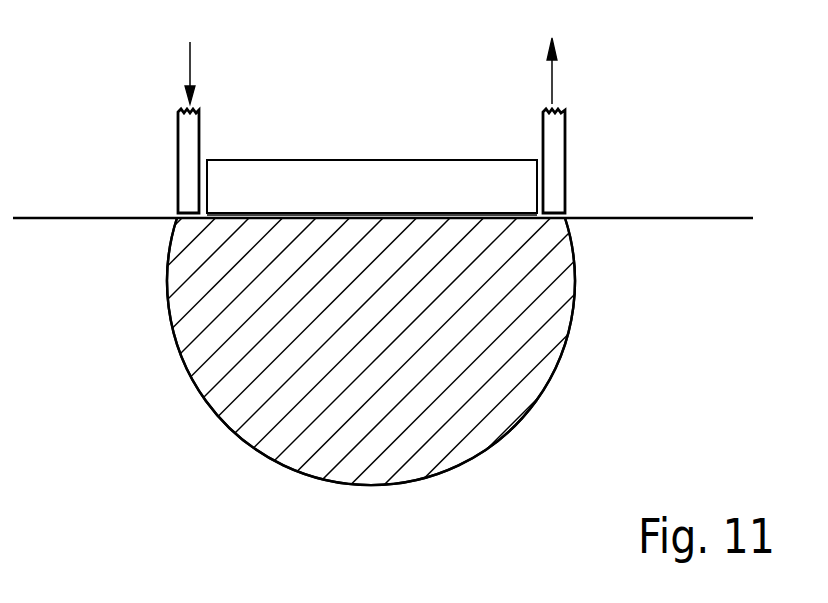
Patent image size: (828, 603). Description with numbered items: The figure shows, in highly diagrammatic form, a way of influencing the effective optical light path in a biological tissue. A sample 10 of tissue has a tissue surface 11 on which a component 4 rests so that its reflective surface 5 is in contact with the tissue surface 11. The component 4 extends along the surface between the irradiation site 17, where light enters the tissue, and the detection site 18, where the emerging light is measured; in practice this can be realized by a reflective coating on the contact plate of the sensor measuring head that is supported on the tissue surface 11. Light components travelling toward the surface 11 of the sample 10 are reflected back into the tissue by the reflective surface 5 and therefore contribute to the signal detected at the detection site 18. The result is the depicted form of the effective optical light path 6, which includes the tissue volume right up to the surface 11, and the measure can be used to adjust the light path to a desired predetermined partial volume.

The component 4 is at (378, 198).
The reflective surface 5 is at (420, 218).
The effective optical light path 6 is at (290, 430).
The sample 10 is at (95, 312).
The tissue surface 11 is at (672, 208).
The irradiation site 17 is at (190, 210).
The detection site 18 is at (555, 207).